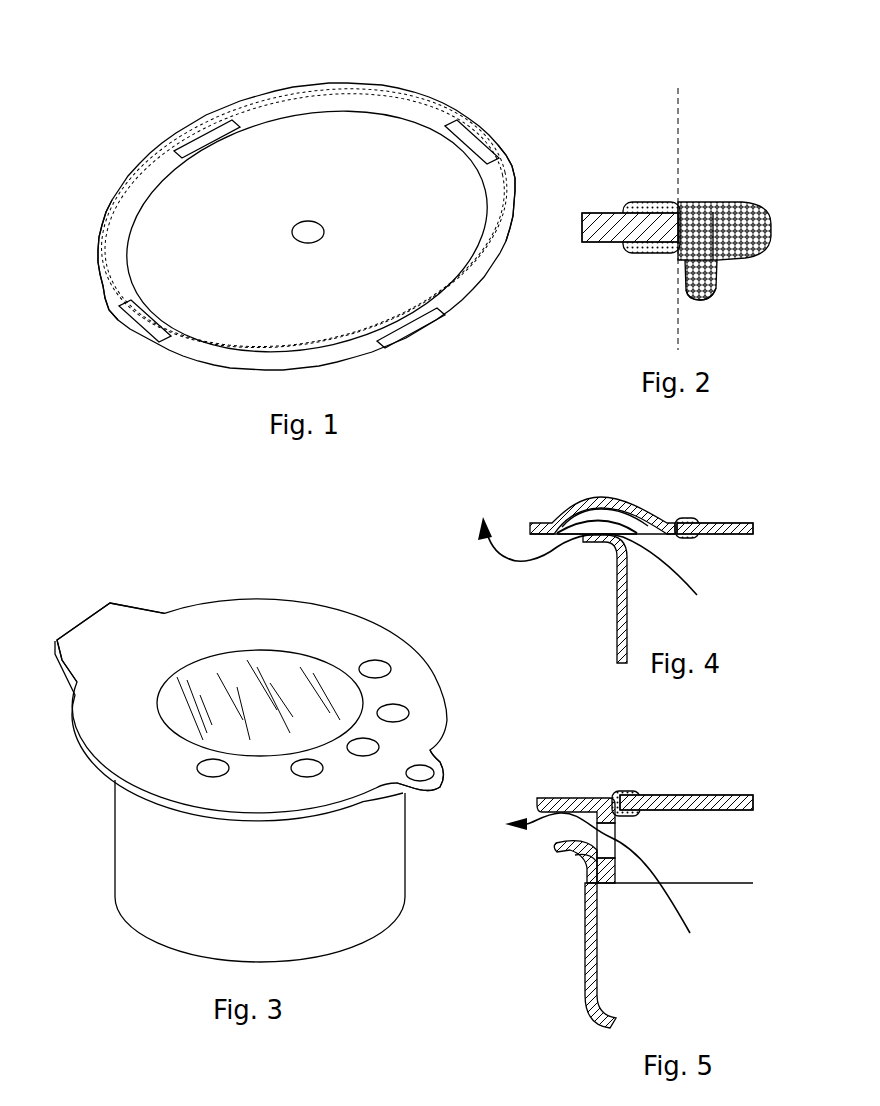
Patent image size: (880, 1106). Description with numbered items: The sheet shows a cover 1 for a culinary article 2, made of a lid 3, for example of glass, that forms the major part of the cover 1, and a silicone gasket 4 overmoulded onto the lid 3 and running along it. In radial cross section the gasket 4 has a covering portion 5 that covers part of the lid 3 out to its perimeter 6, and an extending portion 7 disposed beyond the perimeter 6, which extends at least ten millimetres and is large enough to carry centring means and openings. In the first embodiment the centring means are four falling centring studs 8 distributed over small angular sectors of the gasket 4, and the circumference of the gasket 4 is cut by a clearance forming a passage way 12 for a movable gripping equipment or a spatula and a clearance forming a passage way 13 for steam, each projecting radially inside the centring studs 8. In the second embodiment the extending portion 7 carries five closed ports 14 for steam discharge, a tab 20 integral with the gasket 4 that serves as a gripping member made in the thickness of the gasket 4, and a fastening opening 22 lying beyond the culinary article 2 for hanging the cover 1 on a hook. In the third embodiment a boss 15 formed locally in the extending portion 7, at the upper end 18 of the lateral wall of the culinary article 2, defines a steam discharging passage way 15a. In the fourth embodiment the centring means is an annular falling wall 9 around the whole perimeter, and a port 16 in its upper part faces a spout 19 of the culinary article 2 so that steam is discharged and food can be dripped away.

In FIG. 1, the cover 1 is at (502, 119).
In FIG. 2, the cover 1 is at (676, 140).
In FIG. 3, the cover 1 is at (277, 588).
In FIG. 4, the cover 1 is at (721, 513).
In FIG. 5, the cover 1 is at (732, 786).
In FIG. 3, the culinary article 2 is at (375, 912).
In FIG. 4, the culinary article 2 is at (617, 630).
In FIG. 5, the culinary article 2 is at (585, 972).
In FIG. 1, the lid 3 is at (322, 137).
In FIG. 2, the lid 3 is at (595, 213).
In FIG. 3, the lid 3 is at (277, 680).
In FIG. 4, the lid 3 is at (735, 537).
In FIG. 5, the lid 3 is at (676, 795).
In FIG. 2, the gasket 4 is at (735, 212).
In FIG. 3, the gasket 4 is at (370, 640).
In FIG. 4, the gasket 4 is at (633, 494).
In FIG. 5, the gasket 4 is at (598, 798).
In FIG. 2, the covering portion 5 is at (648, 205).
In FIG. 2, the perimeter 6 is at (686, 203).
In FIG. 2, the extending portion 7 is at (725, 256).
In FIG. 1, the centring studs 8 is at (415, 333).
In FIG. 2, the centring studs 8 is at (703, 292).
In FIG. 5, the annular wall 9 is at (610, 876).
In FIG. 1, the passage way 12 is at (107, 222).
In FIG. 1, the passage way 13 is at (504, 237).
In FIG. 3, the ports 14 is at (402, 706).
In FIG. 4, the boss 15 is at (570, 497).
In FIG. 4, the steam discharging passage way 15a is at (602, 517).
In FIG. 5, the port 16 is at (575, 858).
In FIG. 4, the upper end 18 is at (608, 528).
In FIG. 5, the spout 19 is at (556, 855).
In FIG. 3, the tab 20 is at (107, 640).
In FIG. 3, the fastening opening 22 is at (440, 760).